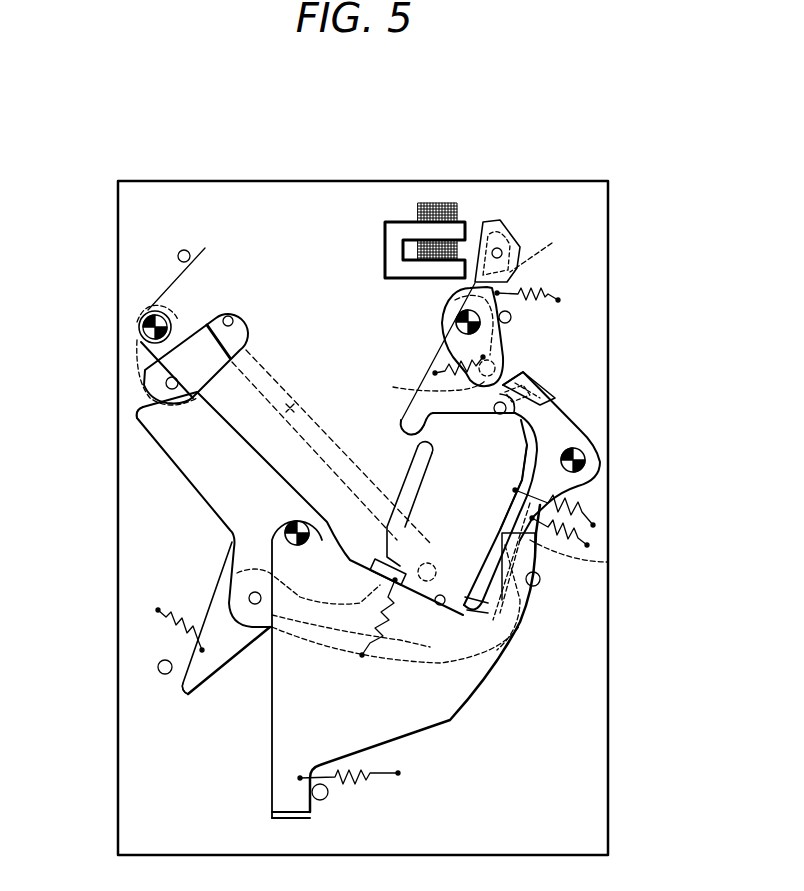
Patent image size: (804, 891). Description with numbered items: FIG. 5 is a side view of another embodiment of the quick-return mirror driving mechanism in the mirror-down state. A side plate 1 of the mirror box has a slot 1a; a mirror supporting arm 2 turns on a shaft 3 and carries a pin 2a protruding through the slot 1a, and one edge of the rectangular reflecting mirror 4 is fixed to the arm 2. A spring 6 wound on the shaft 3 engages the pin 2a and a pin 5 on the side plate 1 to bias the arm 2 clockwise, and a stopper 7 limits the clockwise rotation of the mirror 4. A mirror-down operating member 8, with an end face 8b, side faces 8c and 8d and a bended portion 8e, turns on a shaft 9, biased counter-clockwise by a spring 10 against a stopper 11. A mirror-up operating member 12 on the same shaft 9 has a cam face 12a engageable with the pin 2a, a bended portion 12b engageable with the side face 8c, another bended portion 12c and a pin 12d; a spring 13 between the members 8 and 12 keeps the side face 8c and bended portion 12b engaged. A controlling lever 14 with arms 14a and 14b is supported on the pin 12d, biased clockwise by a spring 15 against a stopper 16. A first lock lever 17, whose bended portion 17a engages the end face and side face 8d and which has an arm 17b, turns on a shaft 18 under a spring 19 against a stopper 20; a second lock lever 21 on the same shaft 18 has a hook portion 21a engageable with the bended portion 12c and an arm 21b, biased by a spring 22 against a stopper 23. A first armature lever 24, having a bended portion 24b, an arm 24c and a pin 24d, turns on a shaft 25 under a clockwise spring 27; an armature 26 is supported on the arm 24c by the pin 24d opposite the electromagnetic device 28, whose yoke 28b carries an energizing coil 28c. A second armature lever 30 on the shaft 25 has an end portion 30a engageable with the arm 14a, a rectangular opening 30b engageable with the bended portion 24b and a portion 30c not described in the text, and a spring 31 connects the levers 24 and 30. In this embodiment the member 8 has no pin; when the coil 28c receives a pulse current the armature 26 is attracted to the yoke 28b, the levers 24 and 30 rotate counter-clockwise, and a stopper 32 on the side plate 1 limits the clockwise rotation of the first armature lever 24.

The side plate 1 is at (298, 175).
The slot 1a is at (230, 316).
The mirror supporting arm 2 is at (190, 357).
The pin 2a is at (166, 384).
The shaft 3 is at (148, 338).
The reflecting mirror 4 is at (292, 408).
The pin 5 is at (184, 250).
The spring 6 is at (170, 285).
The stopper 7 is at (424, 563).
The mirror-down operating member 8 is at (450, 720).
The end face 8b is at (513, 527).
The side face 8c is at (440, 606).
The side face 8d is at (492, 557).
The bended portion 8e is at (292, 820).
The shaft 9 is at (300, 523).
The spring 10 is at (368, 778).
The stopper 11 is at (327, 797).
The mirror-up operating member 12 is at (178, 470).
The cam face 12a is at (140, 412).
The bended portion 12b is at (395, 560).
The bended portion 12c is at (532, 592).
The pin 12d is at (249, 597).
The spring 13 is at (367, 620).
The controlling lever 14 is at (227, 648).
The arm 14a is at (416, 447).
The arm 14b is at (183, 690).
The spring 15 is at (180, 612).
The stopper 16 is at (158, 663).
The first lock lever 17 is at (580, 430).
The bended portion 17a is at (477, 613).
The arm 17b is at (525, 380).
The shaft 18 is at (587, 459).
The spring 19 is at (590, 546).
The stopper 20 is at (541, 582).
The second lock lever 21 is at (520, 472).
The hook portion 21a is at (525, 640).
The arm 21b is at (527, 400).
The spring 22 is at (595, 518).
The stopper 23 is at (608, 565).
The first armature lever 24 is at (505, 303).
The bended portion 24b is at (496, 370).
The arm 24c is at (545, 249).
The pin 24d is at (501, 252).
The shaft 25 is at (460, 318).
The armature 26 is at (492, 225).
The spring 27 is at (536, 293).
The electromagnetic device 28 is at (395, 208).
The yoke 28b is at (397, 232).
The energizing coil 28c is at (437, 205).
The second armature lever 30 is at (430, 372).
The end portion 30a is at (402, 428).
The rectangular opening 30b is at (397, 387).
The pin 30c is at (500, 415).
The spring 31 is at (437, 333).
The stopper 32 is at (512, 318).